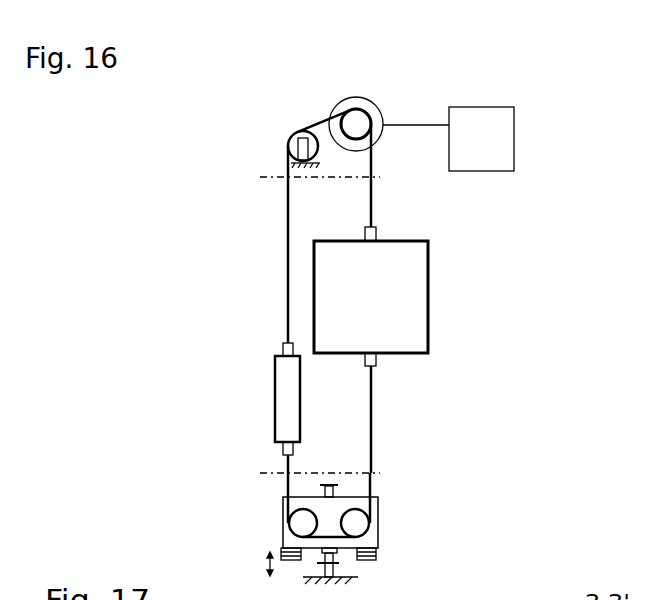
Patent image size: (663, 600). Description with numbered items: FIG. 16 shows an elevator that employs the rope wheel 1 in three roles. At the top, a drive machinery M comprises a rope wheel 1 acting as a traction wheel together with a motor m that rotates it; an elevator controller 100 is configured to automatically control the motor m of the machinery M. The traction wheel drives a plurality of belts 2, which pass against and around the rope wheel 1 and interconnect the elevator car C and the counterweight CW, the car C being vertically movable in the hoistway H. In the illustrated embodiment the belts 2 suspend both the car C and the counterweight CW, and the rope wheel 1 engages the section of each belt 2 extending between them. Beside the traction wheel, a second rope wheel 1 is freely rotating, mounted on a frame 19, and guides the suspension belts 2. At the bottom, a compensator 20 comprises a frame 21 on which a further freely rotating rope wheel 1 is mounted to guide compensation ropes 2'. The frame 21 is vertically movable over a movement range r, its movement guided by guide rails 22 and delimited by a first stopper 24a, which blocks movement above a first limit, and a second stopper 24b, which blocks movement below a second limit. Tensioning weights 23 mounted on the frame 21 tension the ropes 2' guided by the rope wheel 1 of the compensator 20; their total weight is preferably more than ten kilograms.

The rope wheel 1 is at (255, 132).
The belts 2 is at (393, 217).
The compensation ropes 2' is at (398, 419).
The frame 19 is at (302, 138).
The compensator 20 is at (388, 508).
The frame 21 is at (283, 506).
The guide rails 22 is at (335, 557).
The tensioning weights 23 is at (377, 553).
The first stopper 24a is at (325, 488).
The second stopper 24b is at (322, 559).
The elevator controller 100 is at (501, 151).
The drive machinery M is at (308, 75).
The motor m is at (369, 100).
The hoistway H is at (327, 208).
The elevator car C is at (381, 315).
The counterweight CW is at (275, 388).
The movement range r is at (262, 564).